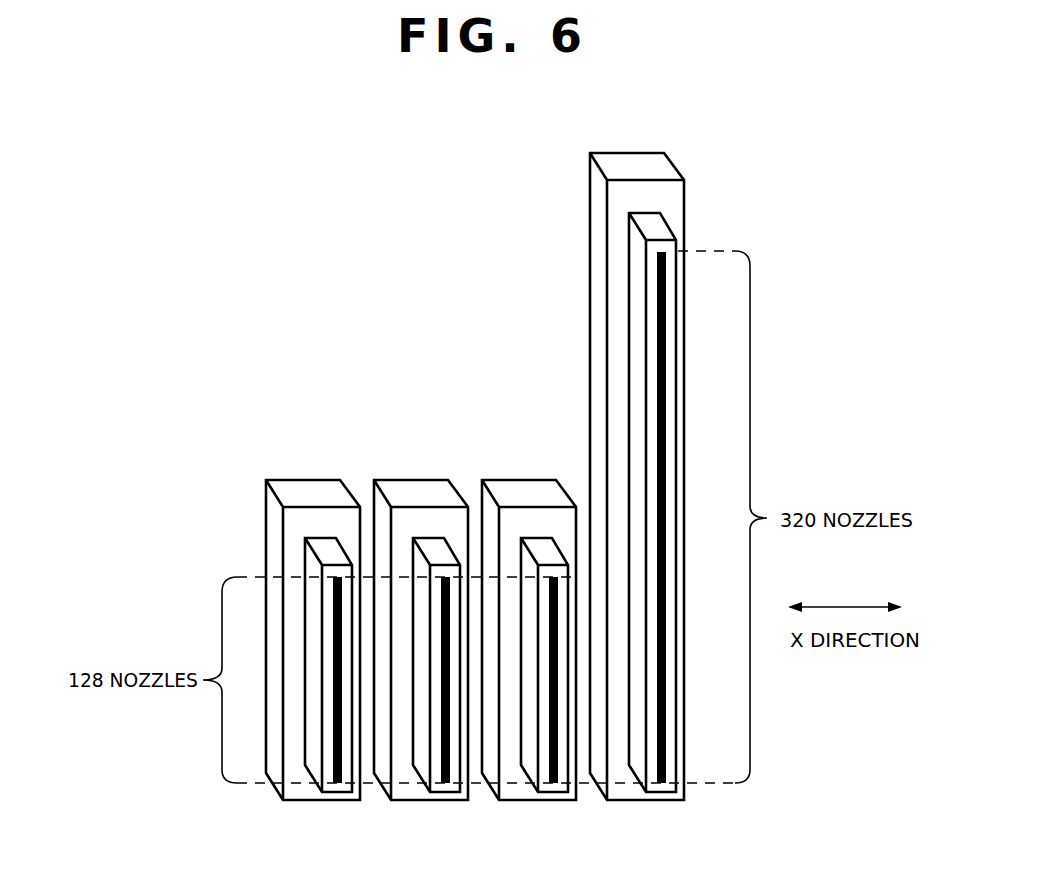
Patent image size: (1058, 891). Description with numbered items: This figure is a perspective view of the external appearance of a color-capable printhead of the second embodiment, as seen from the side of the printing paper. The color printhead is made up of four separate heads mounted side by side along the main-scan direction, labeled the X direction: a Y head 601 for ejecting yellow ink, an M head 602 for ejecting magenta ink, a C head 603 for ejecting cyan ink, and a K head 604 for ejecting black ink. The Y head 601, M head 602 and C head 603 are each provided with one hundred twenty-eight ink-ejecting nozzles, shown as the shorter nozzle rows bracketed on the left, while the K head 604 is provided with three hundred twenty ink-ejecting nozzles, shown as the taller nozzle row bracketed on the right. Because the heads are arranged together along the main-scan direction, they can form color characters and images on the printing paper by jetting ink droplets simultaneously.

The Y head 601 is at (297, 795).
The M head 602 is at (405, 795).
The C head 603 is at (513, 795).
The K head 604 is at (621, 795).